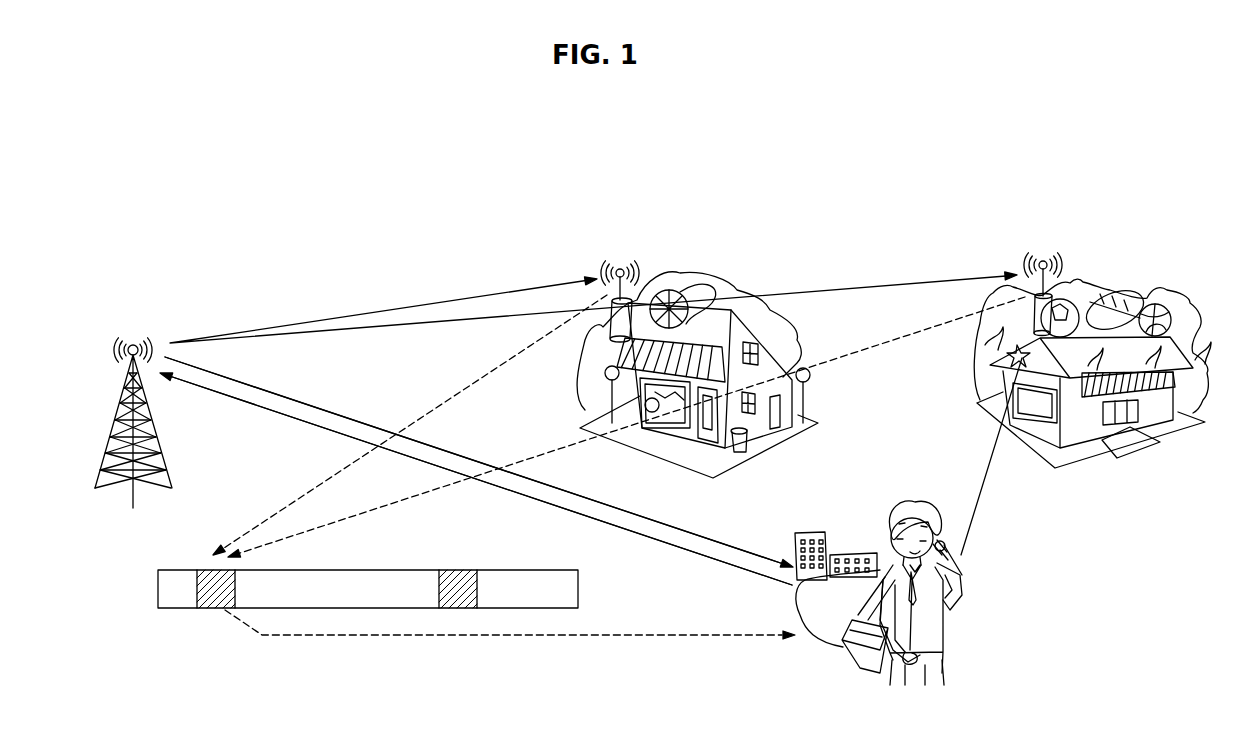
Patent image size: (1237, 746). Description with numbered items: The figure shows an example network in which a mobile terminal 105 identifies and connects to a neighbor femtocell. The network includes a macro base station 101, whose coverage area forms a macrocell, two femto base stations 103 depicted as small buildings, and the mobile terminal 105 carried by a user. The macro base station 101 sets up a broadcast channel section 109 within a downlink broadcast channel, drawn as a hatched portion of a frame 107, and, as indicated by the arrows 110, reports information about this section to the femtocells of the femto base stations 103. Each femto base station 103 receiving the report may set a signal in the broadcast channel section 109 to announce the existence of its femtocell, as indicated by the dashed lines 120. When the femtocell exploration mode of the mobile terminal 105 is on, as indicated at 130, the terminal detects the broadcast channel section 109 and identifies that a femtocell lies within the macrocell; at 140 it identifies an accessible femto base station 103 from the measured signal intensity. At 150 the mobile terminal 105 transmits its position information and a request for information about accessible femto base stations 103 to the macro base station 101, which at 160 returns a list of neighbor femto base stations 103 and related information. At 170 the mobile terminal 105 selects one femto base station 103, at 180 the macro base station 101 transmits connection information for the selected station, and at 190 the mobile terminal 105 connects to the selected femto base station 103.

The macro base station 101 is at (133, 340).
The femto base station 103 is at (697, 272).
The mobile terminal 105 is at (955, 558).
The frame 107 is at (158, 572).
The broadcast channel section 109 is at (213, 592).
The report of broadcast channel section information 110 is at (383, 310).
The setting of signal in broadcast channel section 120 is at (327, 478).
The femtocell exploration mode ON 130 is at (533, 637).
The identification of accessible femto base station 140 is at (943, 669).
The transmission of position information and request 150 is at (643, 537).
The transmission of neighbor femto base station list 160 is at (664, 521).
The selection of femto base station 170 is at (710, 557).
The transmission of connection information 180 is at (723, 542).
The connection to selected femto base station 190 is at (980, 484).